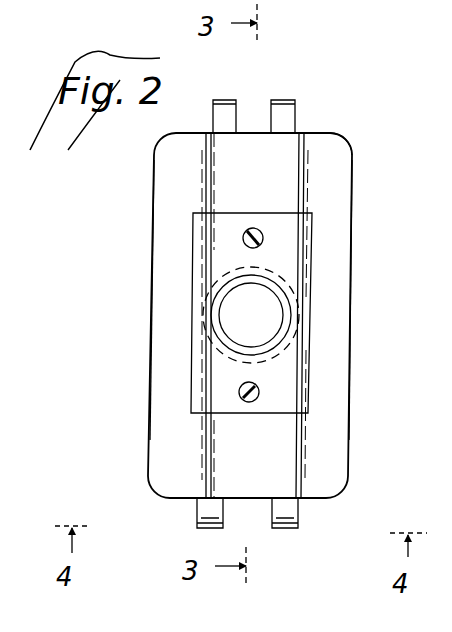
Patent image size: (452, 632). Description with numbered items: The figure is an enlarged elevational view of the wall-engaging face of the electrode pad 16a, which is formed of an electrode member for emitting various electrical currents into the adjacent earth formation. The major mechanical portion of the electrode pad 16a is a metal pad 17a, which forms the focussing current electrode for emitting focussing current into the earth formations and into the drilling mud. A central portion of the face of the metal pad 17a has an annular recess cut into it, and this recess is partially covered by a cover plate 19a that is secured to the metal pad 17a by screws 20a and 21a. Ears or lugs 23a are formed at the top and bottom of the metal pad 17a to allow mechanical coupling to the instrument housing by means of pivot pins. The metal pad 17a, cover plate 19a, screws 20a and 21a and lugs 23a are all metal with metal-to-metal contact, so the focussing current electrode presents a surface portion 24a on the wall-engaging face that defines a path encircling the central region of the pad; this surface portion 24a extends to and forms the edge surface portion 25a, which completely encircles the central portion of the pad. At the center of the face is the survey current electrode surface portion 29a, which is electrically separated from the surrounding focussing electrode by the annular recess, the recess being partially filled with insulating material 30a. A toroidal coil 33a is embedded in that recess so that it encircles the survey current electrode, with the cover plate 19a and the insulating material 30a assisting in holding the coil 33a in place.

The electrode pad 16a is at (149, 363).
The metal pad 17a is at (337, 176).
The cover plate 19a is at (295, 372).
The screw 20a is at (252, 228).
The screw 21a is at (251, 402).
The lugs 23a is at (278, 100).
The surface portion 24a is at (152, 231).
The edge surface portion 25a is at (345, 139).
The survey current electrode surface portion 29a is at (238, 322).
The insulating material 30a is at (285, 337).
The toroidal coil 33a is at (298, 270).